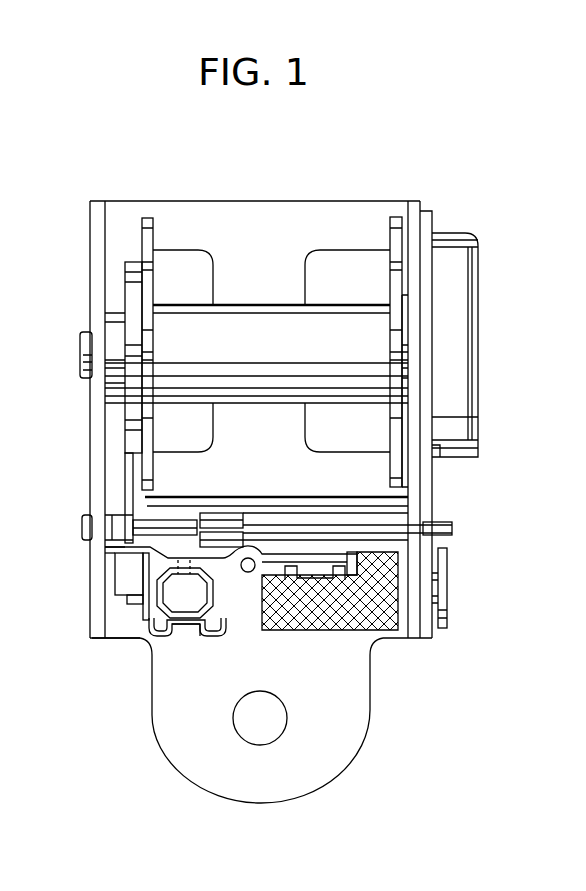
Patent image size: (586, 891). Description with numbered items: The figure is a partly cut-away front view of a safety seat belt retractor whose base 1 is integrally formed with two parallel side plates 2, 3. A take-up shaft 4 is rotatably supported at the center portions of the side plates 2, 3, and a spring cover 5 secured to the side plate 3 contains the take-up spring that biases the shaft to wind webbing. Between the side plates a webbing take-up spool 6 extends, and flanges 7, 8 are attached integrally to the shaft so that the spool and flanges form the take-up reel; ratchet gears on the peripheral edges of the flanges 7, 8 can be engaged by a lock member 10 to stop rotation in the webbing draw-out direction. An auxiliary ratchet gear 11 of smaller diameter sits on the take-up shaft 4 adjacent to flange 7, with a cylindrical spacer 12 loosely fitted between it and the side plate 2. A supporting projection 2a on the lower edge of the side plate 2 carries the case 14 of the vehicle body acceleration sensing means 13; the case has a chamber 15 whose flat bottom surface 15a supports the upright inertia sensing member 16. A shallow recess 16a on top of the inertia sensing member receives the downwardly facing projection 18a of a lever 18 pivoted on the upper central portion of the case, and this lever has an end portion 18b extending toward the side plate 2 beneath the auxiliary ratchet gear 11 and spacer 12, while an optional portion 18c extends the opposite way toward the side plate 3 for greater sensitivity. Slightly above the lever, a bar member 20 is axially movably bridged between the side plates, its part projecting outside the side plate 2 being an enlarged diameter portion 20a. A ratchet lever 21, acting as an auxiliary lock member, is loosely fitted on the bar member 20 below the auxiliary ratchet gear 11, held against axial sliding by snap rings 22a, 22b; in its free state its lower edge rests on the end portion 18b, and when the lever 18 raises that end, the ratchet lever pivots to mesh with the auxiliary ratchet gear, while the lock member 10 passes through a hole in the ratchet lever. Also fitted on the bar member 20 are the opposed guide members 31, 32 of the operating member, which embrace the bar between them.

The base 1 is at (266, 218).
The side plate 2 is at (99, 202).
The supporting projection 2a is at (120, 640).
The side plate 3 is at (412, 203).
The take-up shaft 4 is at (80, 362).
The spring cover 5 is at (462, 437).
The webbing take-up spool 6 is at (247, 323).
The flange 7 is at (150, 262).
The flange 8 is at (390, 255).
The lock member 10 is at (270, 505).
The auxiliary ratchet gear 11 is at (130, 308).
The cylindrical spacer 12 is at (113, 325).
The vehicle body acceleration sensing means 13 is at (208, 645).
The case 14 is at (152, 625).
The chamber 15 is at (228, 608).
The flat bottom surface 15a is at (178, 627).
The inertia sensing member 16 is at (202, 626).
The shallow recess 16a is at (150, 595).
The lever 18 is at (275, 552).
The downwardly facing projection 18a is at (182, 568).
The end portion 18b is at (120, 547).
The portion 18c is at (313, 555).
The bar member 20 is at (402, 528).
The enlarged diameter portion 20a is at (83, 525).
The ratchet lever 21 is at (130, 460).
The snap ring 22a is at (118, 517).
The snap ring 22b is at (160, 518).
The guide member 31 is at (217, 514).
The guide member 32 is at (236, 540).